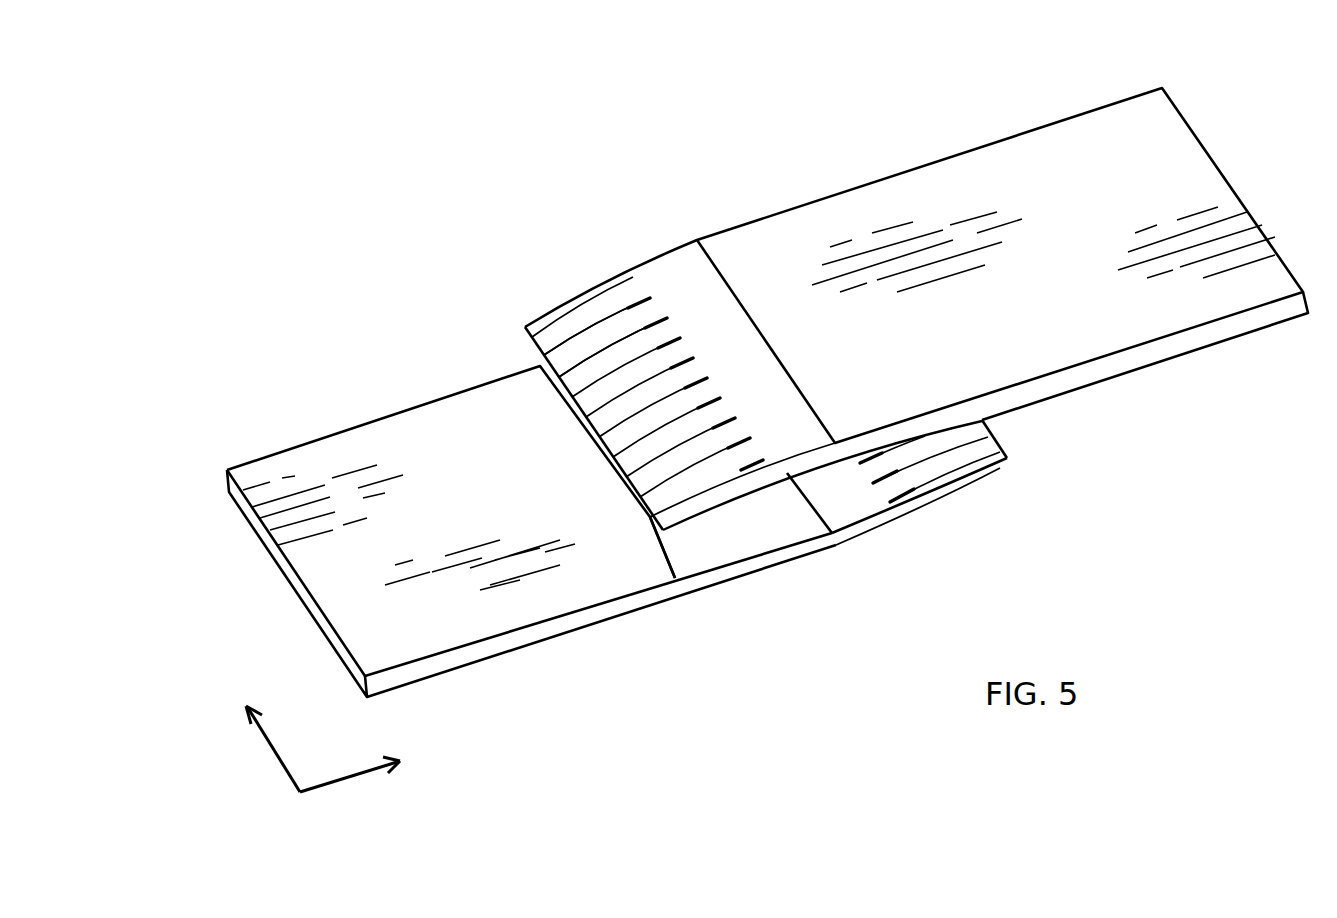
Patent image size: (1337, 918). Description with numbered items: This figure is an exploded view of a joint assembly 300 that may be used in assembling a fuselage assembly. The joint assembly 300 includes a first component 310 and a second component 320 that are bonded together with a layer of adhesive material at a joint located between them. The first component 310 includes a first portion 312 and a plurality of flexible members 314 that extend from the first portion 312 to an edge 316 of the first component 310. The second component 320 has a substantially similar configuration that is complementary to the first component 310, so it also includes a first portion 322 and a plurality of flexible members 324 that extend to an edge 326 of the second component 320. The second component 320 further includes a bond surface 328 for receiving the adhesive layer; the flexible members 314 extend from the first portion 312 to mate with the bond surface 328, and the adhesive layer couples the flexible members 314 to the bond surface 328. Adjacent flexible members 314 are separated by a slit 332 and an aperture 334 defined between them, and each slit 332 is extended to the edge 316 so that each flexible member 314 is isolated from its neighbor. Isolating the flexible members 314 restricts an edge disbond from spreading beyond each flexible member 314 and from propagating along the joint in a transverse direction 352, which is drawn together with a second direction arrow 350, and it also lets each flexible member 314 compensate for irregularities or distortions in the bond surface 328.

The joint assembly 300 is at (297, 136).
The first component 310 is at (1162, 88).
The first portion 312 is at (1072, 150).
The flexible members 314 is at (565, 363).
The edge 316 is at (650, 515).
The second component 320 is at (227, 470).
The first portion 322 is at (422, 640).
The flexible members 324 is at (1007, 460).
The edge 326 is at (987, 423).
The bond surface 328 is at (733, 543).
The slit 332 is at (603, 320).
The aperture 334 is at (657, 292).
The first direction arrow 350 is at (343, 782).
The transverse direction 352 is at (272, 752).